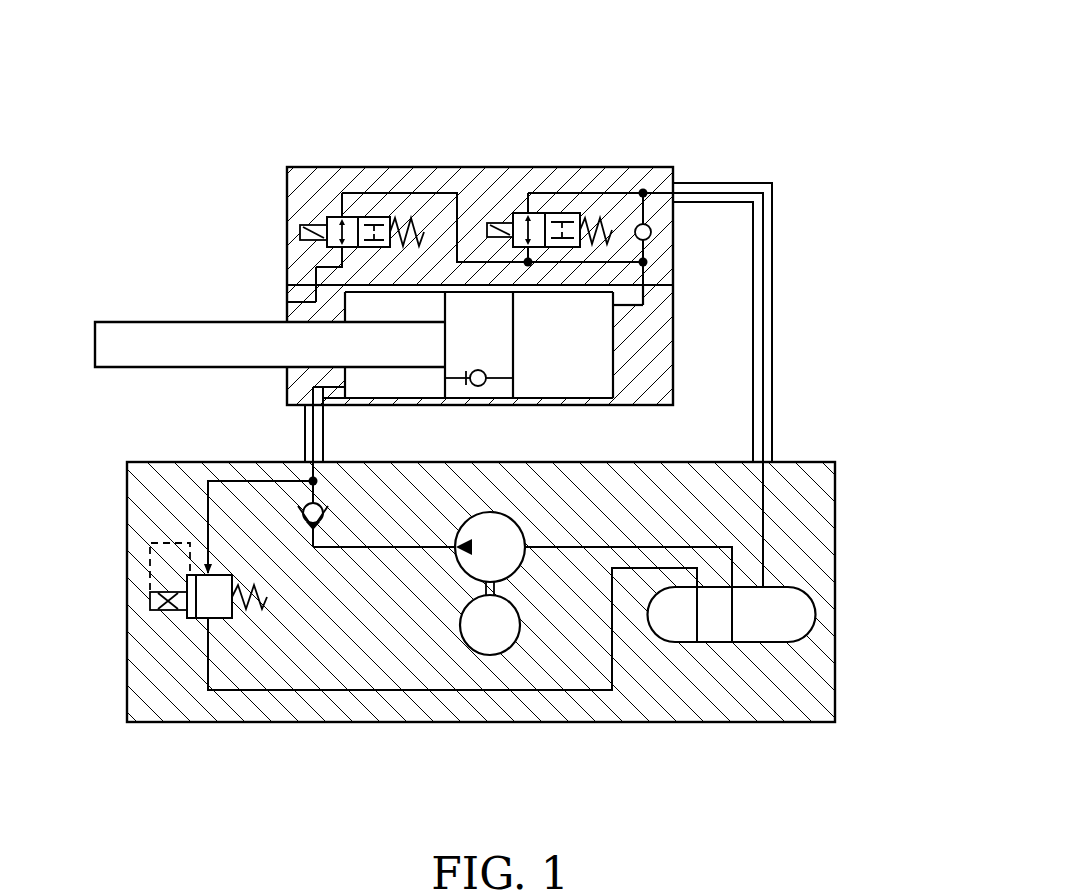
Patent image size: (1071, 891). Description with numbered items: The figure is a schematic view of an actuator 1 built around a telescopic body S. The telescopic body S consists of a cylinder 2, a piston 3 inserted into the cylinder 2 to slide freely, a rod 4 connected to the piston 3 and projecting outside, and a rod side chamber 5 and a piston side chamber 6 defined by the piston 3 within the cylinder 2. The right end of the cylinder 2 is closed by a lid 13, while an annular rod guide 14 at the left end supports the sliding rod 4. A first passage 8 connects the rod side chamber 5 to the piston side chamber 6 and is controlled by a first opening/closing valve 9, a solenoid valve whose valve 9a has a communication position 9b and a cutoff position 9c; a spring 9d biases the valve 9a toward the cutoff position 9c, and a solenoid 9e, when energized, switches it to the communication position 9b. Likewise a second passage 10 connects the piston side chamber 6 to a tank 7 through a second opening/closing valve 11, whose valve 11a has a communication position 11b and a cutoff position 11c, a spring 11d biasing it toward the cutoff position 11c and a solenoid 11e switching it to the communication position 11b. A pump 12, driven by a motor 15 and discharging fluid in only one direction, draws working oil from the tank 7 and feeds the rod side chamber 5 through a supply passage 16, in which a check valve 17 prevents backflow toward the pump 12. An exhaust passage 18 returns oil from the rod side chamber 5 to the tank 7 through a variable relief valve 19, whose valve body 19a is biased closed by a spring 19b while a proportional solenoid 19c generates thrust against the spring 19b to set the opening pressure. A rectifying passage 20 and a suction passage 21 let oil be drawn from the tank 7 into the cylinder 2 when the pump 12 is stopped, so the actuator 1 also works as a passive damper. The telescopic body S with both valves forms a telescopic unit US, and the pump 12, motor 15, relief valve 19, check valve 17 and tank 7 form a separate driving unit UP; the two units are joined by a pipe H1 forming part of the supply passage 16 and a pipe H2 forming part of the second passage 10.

The actuator 1 is at (146, 97).
The cylinder 2 is at (550, 405).
The piston 3 is at (462, 398).
The rod 4 is at (124, 370).
The rod side chamber 5 is at (355, 310).
The piston side chamber 6 is at (588, 345).
The tank 7 is at (800, 590).
The first passage 8 is at (423, 210).
The first opening/closing valve 9 is at (286, 226).
The valve 9a is at (320, 212).
The communication position 9b is at (345, 217).
The cutoff position 9c is at (377, 217).
The spring 9d is at (412, 225).
The solenoid 9e is at (305, 245).
The second passage 10 is at (765, 318).
The second opening/closing valve 11 is at (489, 197).
The valve 11a is at (587, 208).
The communication position 11b is at (560, 213).
The cutoff position 11c is at (570, 213).
The spring 11d is at (630, 193).
The solenoid 11e is at (505, 222).
The pump 12 is at (490, 512).
The lid 13 is at (673, 318).
The rod guide 14 is at (300, 380).
The motor 15 is at (509, 654).
The supply passage 16 is at (392, 547).
The check valve 17 is at (322, 505).
The exhaust passage 18 is at (303, 692).
The variable relief valve 19 is at (140, 586).
The valve body 19a is at (185, 618).
The spring 19b is at (243, 623).
The proportional solenoid 19c is at (150, 600).
The rectifying passage 20 is at (513, 376).
The suction passage 21 is at (660, 250).
The telescopic unit US is at (283, 188).
The driving unit UP is at (845, 485).
The pipe H1 is at (305, 435).
The pipe H2 is at (774, 232).
The telescopic body S is at (122, 307).